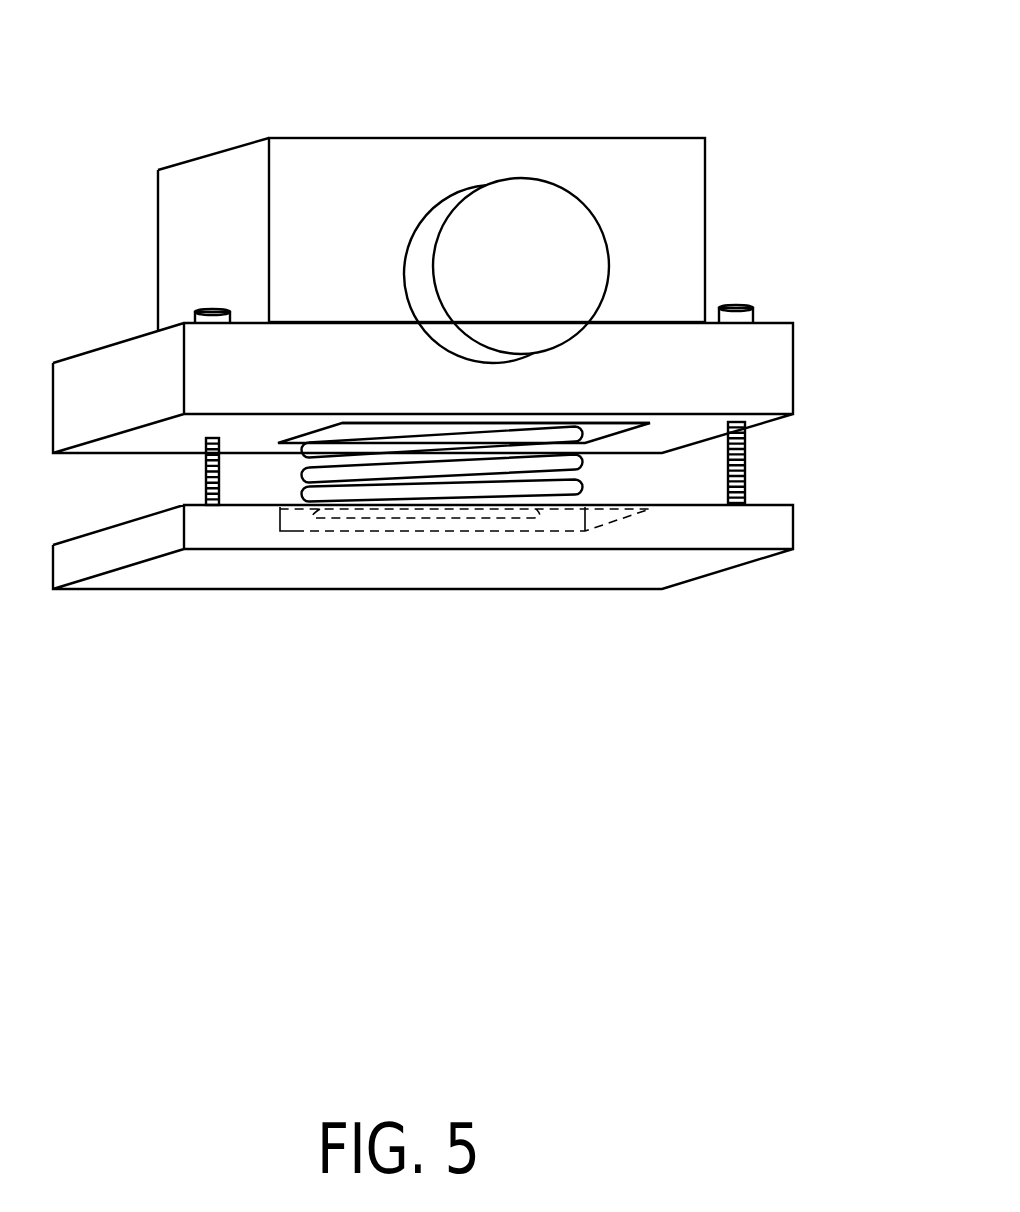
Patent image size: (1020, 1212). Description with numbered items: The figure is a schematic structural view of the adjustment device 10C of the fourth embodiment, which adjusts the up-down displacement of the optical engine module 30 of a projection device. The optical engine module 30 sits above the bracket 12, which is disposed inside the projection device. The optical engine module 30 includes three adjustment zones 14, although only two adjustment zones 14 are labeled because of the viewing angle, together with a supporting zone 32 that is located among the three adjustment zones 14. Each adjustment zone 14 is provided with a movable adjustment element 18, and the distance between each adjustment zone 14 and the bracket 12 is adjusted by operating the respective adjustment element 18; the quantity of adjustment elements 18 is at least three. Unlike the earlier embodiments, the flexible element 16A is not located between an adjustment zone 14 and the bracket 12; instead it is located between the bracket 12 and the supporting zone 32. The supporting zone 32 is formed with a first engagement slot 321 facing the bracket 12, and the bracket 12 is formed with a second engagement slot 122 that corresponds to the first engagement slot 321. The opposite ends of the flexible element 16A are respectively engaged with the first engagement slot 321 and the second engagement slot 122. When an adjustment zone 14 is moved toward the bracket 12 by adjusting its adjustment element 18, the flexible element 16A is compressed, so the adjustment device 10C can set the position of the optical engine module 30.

The optical engine module 30 is at (348, 138).
The adjustment zone 14 is at (746, 430).
The adjustment element 18 is at (746, 478).
The flexible element 16A is at (313, 478).
The bracket 12 is at (423, 620).
The second engagement slot 122 is at (575, 535).
The supporting zone 32 is at (629, 444).
The first engagement slot 321 is at (595, 428).
The adjustment device 10C is at (455, 554).